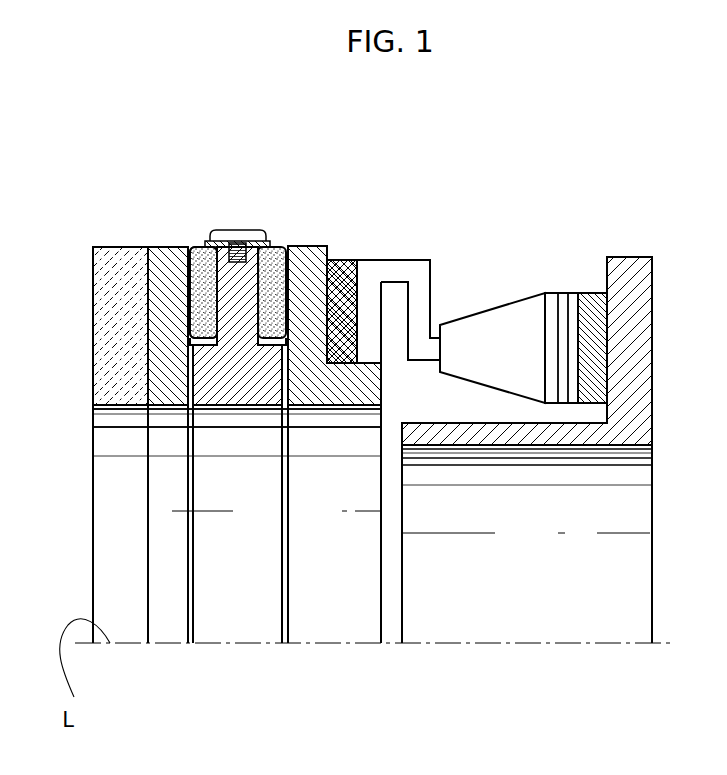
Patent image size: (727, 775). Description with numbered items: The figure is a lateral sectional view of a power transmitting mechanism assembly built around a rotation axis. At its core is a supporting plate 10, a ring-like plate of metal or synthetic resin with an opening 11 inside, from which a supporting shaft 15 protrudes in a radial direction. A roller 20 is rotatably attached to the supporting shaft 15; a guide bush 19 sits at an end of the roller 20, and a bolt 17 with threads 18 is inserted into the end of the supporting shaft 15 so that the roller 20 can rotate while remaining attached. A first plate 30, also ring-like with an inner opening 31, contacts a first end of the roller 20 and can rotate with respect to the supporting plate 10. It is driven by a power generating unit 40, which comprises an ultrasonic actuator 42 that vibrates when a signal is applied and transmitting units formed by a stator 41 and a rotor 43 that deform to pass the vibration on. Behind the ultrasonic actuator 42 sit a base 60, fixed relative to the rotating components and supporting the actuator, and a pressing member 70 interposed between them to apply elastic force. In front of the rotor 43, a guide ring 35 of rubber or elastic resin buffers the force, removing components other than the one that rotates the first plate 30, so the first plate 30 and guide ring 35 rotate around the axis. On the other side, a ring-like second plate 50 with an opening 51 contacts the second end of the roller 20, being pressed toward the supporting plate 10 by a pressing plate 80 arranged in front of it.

The supporting plate 10 is at (207, 380).
The opening 11 is at (237, 407).
The supporting shaft 15 is at (215, 313).
The bolt 17 is at (220, 230).
The threads 18 is at (240, 242).
The guide bush 19 is at (205, 245).
The roller 20 is at (276, 232).
The first plate 30 is at (310, 252).
The opening 31 is at (318, 405).
The guide ring 35 is at (347, 263).
The power generating unit 40 is at (565, 182).
The stator 41 is at (502, 316).
The ultrasonic actuator 42 is at (578, 284).
The rotor 43 is at (423, 268).
The second plate 50 is at (163, 248).
The opening 51 is at (173, 406).
The base 60 is at (640, 265).
The pressing member 70 is at (595, 300).
The pressing plate 80 is at (100, 256).